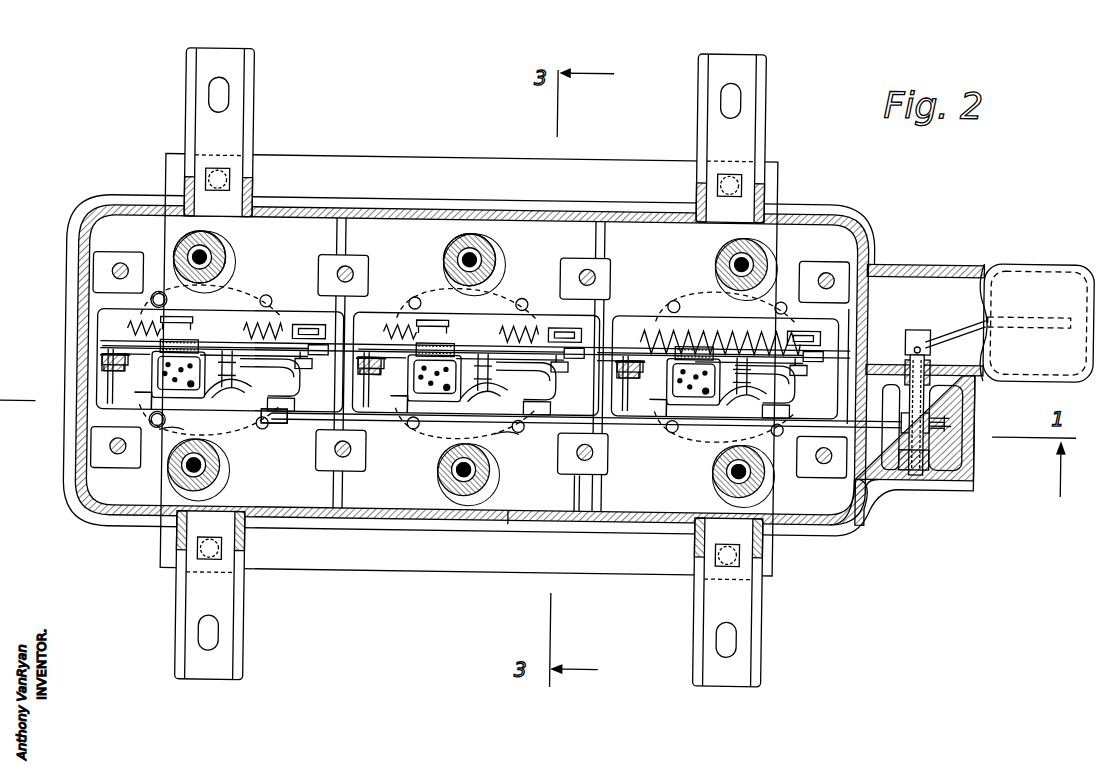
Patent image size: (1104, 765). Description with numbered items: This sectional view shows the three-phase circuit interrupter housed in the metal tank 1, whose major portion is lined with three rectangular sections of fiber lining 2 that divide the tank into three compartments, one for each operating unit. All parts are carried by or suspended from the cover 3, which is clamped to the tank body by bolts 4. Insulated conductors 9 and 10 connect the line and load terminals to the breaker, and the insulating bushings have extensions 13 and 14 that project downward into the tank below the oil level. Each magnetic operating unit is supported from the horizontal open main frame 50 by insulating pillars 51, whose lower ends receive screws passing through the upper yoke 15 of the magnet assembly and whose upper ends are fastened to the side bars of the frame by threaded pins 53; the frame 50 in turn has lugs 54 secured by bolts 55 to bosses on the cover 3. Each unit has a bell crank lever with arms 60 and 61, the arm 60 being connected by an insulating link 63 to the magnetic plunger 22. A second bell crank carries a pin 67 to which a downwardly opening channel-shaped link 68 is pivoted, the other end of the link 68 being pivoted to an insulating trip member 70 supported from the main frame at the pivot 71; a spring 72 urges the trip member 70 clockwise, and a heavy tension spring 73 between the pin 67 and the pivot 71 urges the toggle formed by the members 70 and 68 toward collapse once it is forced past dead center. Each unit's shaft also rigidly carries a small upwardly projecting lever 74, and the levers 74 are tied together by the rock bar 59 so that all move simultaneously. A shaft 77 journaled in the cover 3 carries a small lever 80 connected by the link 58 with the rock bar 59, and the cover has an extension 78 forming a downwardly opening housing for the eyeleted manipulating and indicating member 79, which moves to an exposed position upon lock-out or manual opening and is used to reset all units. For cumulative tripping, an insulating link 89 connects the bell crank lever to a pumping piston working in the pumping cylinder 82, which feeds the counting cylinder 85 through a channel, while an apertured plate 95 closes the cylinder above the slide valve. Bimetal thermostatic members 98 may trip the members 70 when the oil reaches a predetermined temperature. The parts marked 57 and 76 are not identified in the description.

The metal tank 1 is at (832, 532).
The fiber lining 2 is at (596, 520).
The cover 3 is at (512, 520).
The bolts 4 is at (760, 178).
The insulated conductors 9 is at (185, 470).
The insulated conductors 10 is at (215, 252).
The bushing extensions 13 is at (222, 487).
The bushing extensions 14 is at (222, 243).
The upper yoke 15 is at (172, 424).
The magnetic plunger 22 is at (195, 392).
The main frame 50 is at (300, 425).
The insulating pillars 51 is at (158, 292).
The threaded pins 53 is at (180, 292).
The lugs 54 is at (367, 455).
The bolts 55 is at (612, 272).
The collar 57 is at (832, 422).
The link 58 is at (860, 422).
The rock bar 59 is at (505, 430).
The bell crank arm 60 is at (242, 388).
The bell crank arm 61 is at (300, 378).
The link 63 is at (205, 335).
The pin 67 is at (305, 362).
The channel-shaped link 68 is at (193, 388).
The trip member 70 is at (125, 366).
The pivot pin 71 is at (112, 381).
The spring 72 is at (100, 354).
The tension spring 73 is at (142, 322).
The lever 74 is at (295, 408).
The adjusting nut 76 is at (333, 309).
The shaft 77 is at (903, 462).
The cover extension 78 is at (945, 255).
The manipulating and indicating member 79 is at (962, 310).
The small lever 80 is at (932, 415).
The pumping cylinder 82 is at (475, 367).
The counting cylinder 85 is at (190, 322).
The insulating link 89 is at (238, 335).
The plate 95 is at (160, 392).
The bimetal thermostatic members 98 is at (114, 388).